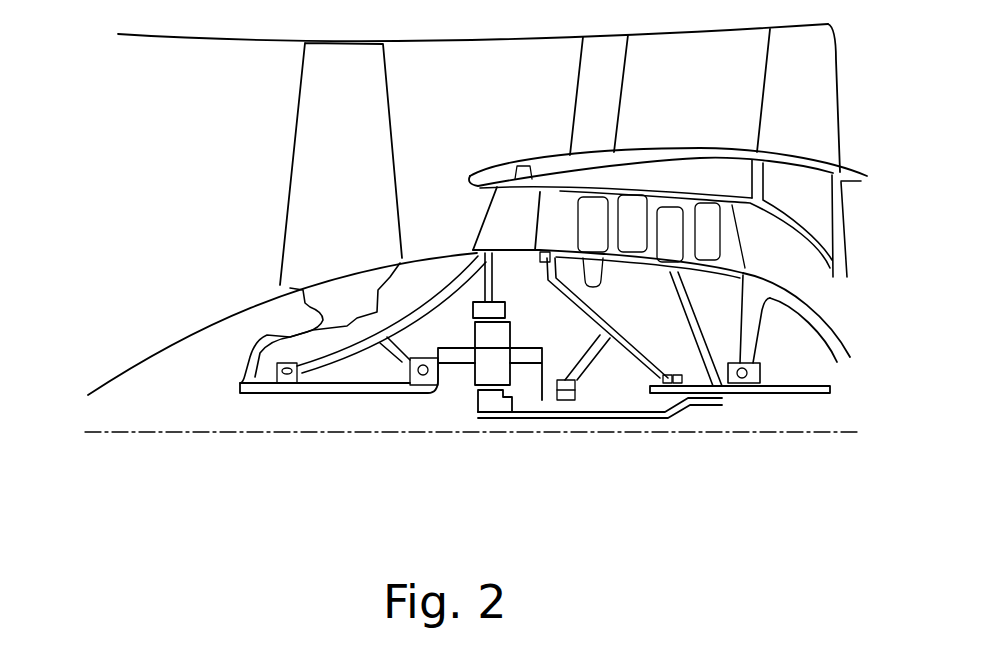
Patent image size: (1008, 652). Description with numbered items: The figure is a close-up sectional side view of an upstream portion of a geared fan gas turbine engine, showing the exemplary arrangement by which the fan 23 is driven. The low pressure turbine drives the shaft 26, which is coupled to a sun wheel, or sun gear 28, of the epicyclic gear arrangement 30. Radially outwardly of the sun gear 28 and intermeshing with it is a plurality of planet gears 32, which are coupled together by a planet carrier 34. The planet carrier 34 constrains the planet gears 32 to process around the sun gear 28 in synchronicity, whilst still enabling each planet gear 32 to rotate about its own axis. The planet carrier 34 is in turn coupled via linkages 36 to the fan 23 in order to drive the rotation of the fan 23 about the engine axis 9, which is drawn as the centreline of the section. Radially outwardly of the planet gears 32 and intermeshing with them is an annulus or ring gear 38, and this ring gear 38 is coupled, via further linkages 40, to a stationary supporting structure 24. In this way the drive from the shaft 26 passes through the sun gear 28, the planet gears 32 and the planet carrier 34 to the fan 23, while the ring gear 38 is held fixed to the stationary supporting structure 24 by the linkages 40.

The engine axis 9 is at (272, 433).
The fan 23 is at (310, 165).
The stationary supporting structure 24 is at (500, 217).
The shaft 26 is at (637, 413).
The sun gear 28 is at (494, 402).
The epicyclic gear arrangement 30 is at (446, 398).
The planet gears 32 is at (478, 373).
The planet carrier 34 is at (530, 390).
The linkages 36 is at (448, 374).
The ring gear 38 is at (473, 310).
The linkages 40 is at (492, 288).